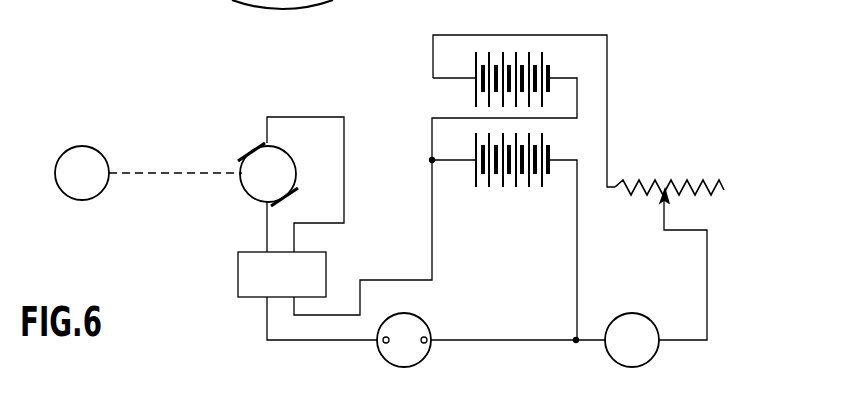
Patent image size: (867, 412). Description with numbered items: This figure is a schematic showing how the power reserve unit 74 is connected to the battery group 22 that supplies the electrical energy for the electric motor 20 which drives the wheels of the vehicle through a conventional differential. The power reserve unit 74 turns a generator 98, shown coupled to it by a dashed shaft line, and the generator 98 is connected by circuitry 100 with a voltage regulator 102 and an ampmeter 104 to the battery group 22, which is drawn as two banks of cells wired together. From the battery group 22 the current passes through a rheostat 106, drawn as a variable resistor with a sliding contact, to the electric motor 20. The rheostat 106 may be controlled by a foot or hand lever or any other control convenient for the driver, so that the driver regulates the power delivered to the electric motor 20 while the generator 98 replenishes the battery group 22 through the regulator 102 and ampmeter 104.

The power reserve unit 74 is at (130, 134).
The generator 98 is at (252, 186).
The circuitry 100 is at (325, 130).
The voltage regulator 102 is at (294, 283).
The battery group 22 is at (547, 60).
The ampmeter 104 is at (418, 354).
The electric motor 20 is at (612, 355).
The rheostat 106 is at (672, 182).